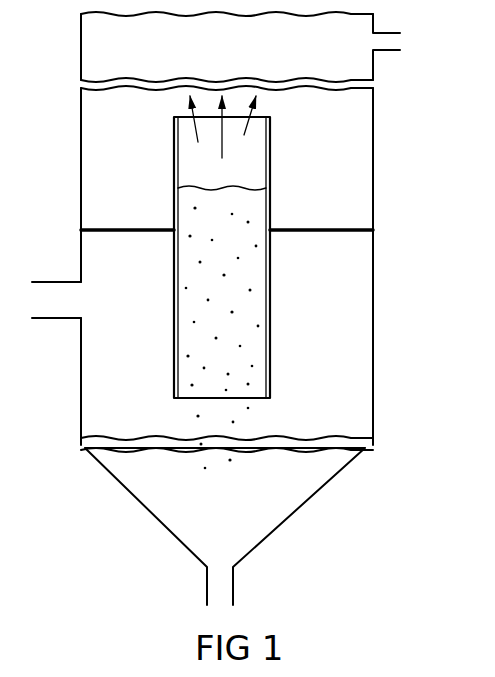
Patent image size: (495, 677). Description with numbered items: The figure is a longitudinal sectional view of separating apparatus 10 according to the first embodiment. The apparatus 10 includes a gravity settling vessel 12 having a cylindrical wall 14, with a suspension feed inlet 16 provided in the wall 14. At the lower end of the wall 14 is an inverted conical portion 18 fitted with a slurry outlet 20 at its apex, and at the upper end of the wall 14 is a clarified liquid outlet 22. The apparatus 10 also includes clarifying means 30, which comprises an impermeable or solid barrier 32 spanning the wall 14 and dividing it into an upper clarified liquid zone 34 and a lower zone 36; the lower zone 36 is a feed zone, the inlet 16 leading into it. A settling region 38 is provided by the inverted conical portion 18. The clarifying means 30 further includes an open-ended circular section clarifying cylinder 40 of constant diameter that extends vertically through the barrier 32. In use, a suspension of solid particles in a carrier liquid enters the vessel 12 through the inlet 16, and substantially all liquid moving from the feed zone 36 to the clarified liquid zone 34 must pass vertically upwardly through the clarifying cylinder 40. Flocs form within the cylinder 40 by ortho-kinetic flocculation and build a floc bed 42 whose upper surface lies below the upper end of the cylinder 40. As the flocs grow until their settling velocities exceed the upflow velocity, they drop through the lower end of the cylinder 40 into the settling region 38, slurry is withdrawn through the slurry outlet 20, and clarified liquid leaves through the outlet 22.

The separating apparatus 10 is at (263, 308).
The gravity settling vessel 12 is at (256, 308).
The cylindrical wall 14 is at (374, 326).
The suspension feed inlet 16 is at (55, 308).
The inverted conical portion 18 is at (172, 537).
The slurry outlet 20 is at (218, 585).
The clarified liquid outlet 22 is at (388, 44).
The clarifying means 30 is at (126, 188).
The impermeable barrier 32 is at (112, 228).
The upper clarified liquid zone 34 is at (333, 216).
The lower zone 36 is at (328, 404).
The settling region 38 is at (281, 489).
The clarifying cylinder 40 is at (270, 320).
The floc bed 42 is at (258, 218).